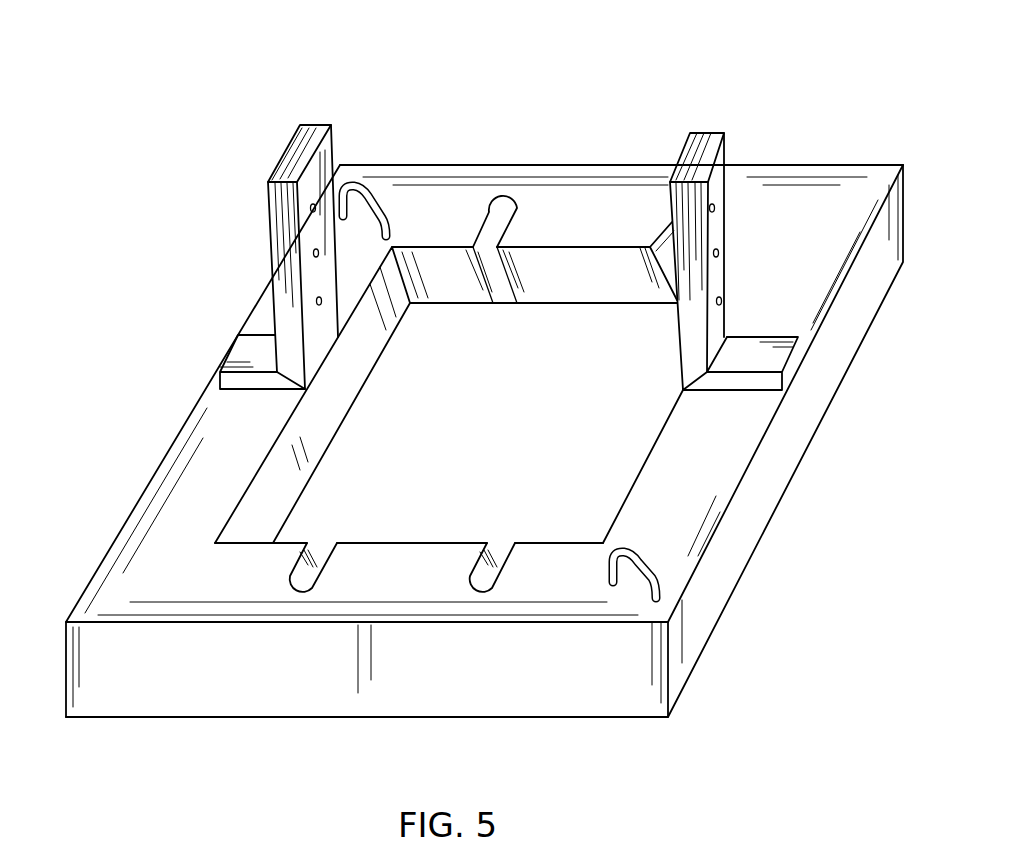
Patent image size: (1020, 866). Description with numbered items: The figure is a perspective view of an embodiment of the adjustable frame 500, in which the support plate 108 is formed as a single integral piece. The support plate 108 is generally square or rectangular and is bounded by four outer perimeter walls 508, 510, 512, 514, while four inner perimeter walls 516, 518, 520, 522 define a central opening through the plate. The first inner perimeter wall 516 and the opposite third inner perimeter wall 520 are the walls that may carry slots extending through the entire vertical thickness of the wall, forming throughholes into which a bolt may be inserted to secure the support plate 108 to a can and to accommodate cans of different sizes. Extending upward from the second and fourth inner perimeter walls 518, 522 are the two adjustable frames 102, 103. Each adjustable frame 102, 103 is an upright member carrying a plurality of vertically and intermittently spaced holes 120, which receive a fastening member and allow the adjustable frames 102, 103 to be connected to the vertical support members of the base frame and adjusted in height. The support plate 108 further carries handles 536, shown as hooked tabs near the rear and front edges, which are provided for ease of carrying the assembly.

The adjustable frame 500 is at (333, 82).
The adjustable frame 102 is at (717, 163).
The adjustable frame 103 is at (306, 135).
The support plate 108 is at (632, 725).
The holes 120 is at (306, 253).
The outer perimeter wall 508 is at (289, 697).
The outer perimeter wall 510 is at (110, 544).
The outer perimeter wall 512 is at (510, 158).
The outer perimeter wall 514 is at (700, 615).
The first inner perimeter wall 516 is at (413, 534).
The second inner perimeter wall 518 is at (330, 413).
The third inner perimeter wall 520 is at (571, 283).
The fourth inner perimeter wall 522 is at (648, 445).
The handles 536 is at (364, 186).